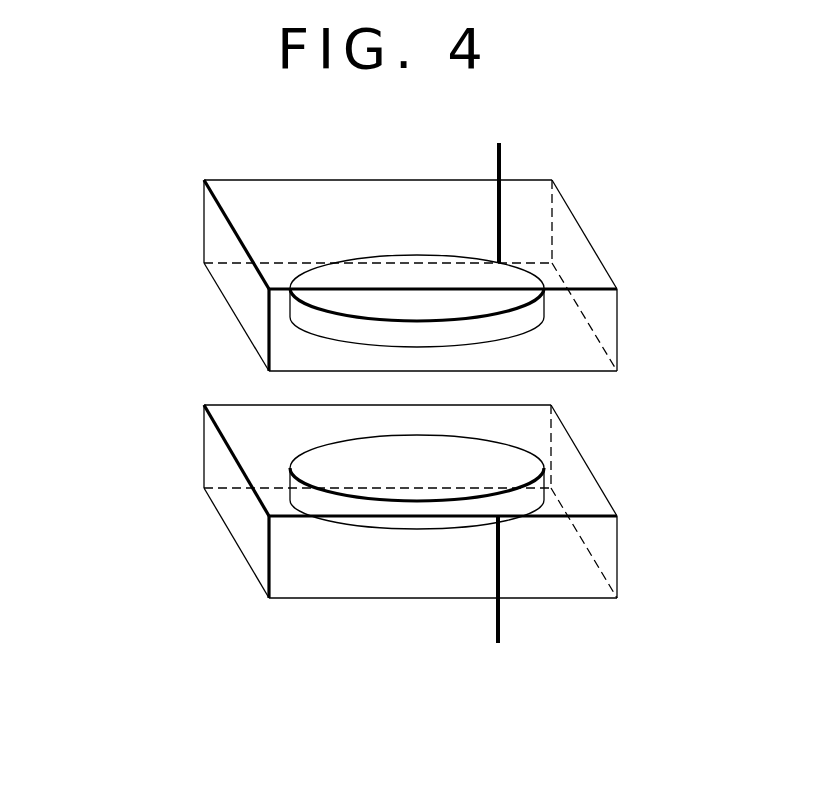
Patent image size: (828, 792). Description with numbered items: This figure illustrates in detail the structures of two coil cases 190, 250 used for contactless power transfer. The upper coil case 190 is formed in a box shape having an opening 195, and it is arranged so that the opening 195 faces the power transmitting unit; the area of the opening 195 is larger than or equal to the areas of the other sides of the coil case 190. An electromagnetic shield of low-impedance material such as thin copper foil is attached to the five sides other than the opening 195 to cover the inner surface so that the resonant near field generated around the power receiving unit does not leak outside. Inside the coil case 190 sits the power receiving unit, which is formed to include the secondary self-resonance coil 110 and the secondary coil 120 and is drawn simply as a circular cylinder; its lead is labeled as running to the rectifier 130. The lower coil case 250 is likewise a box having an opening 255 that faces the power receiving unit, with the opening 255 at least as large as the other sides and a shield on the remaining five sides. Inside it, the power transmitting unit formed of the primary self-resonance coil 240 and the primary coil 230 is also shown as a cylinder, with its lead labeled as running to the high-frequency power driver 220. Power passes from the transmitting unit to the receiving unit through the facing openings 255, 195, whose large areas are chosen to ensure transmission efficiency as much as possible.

The coil case 190 is at (278, 180).
The opening 195 is at (582, 363).
The secondary self-resonance coil 110 is at (290, 300).
The secondary coil 120 is at (417, 301).
The rectifier 130 is at (498, 188).
The primary coil 230 is at (290, 478).
The primary self-resonance coil 240 is at (417, 482).
The coil case 250 is at (308, 598).
The opening 255 is at (582, 478).
The high-frequency power driver 220 is at (496, 606).